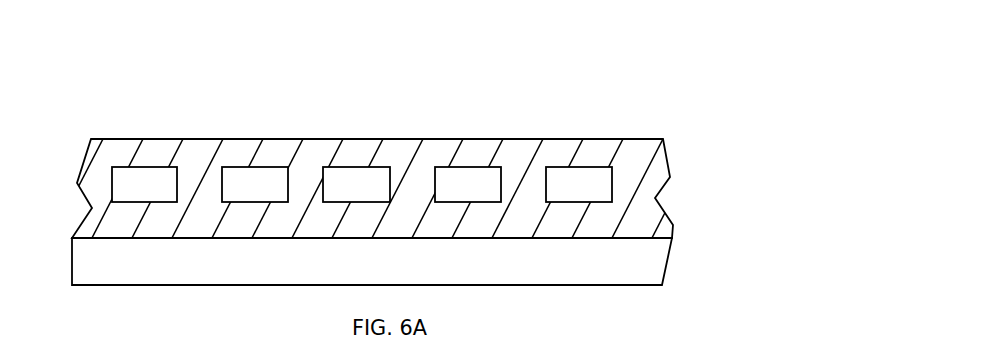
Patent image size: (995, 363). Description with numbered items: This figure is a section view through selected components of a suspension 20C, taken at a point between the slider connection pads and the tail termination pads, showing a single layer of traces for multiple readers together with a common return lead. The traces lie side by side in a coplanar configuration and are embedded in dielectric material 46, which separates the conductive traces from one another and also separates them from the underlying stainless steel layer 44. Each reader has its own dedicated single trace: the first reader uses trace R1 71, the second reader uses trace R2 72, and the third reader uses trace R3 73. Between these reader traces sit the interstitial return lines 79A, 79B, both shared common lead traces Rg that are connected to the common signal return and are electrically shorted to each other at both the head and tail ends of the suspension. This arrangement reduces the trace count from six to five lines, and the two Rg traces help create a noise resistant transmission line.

The suspension 20C is at (87, 118).
The dedicated trace R1 71 is at (148, 167).
The interstitial return line Rg 79A is at (272, 167).
The dedicated trace R2 72 is at (385, 167).
The interstitial return line Rg 79B is at (472, 167).
The dedicated trace R3 73 is at (590, 167).
The dielectric material 46 is at (662, 170).
The stainless steel layer 44 is at (658, 260).